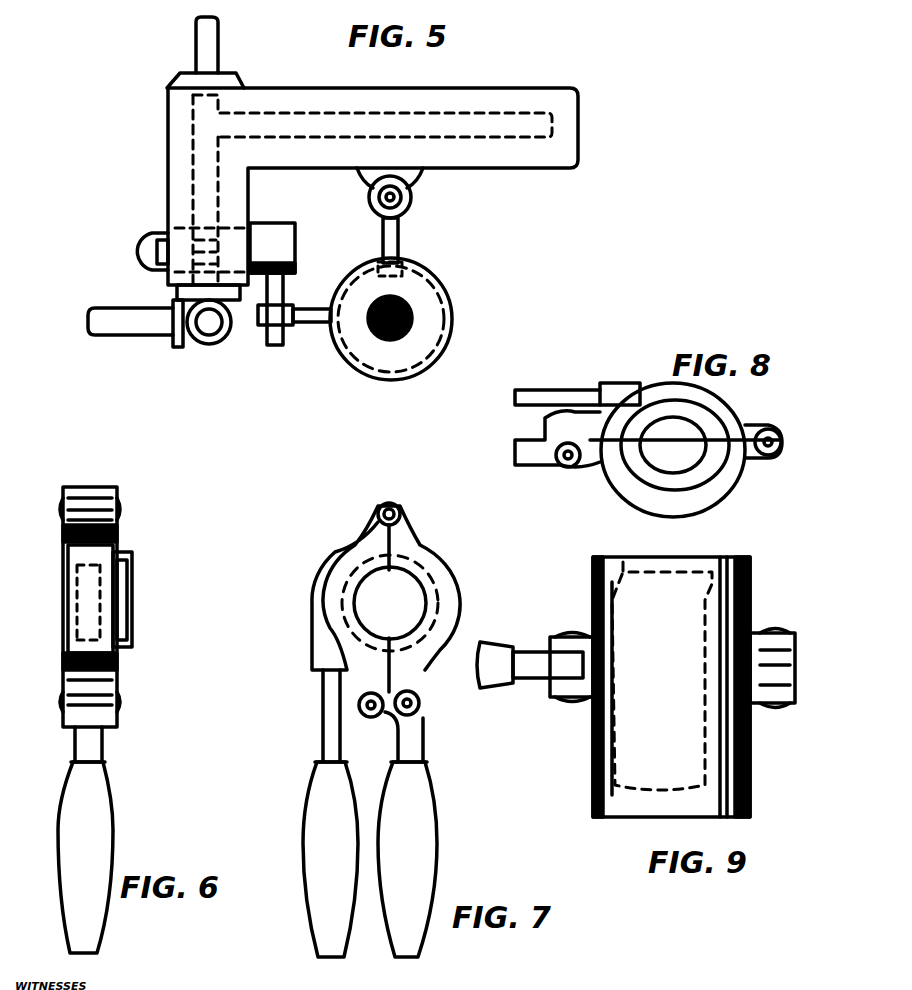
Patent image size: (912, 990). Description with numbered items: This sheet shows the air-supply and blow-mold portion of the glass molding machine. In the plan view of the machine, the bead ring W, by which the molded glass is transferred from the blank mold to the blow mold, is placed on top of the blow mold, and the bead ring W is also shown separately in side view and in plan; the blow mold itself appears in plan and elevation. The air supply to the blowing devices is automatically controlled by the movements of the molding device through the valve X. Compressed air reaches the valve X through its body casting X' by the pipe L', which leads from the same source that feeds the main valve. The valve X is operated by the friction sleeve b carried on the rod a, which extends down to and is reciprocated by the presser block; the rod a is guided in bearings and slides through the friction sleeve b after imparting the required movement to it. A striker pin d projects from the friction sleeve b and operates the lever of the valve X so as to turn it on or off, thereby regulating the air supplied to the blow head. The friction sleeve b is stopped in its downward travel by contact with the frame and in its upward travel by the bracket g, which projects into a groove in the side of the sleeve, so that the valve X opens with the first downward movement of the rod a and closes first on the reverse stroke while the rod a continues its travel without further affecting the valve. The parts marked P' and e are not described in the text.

In FIG. 5, the body casting X' is at (351, 186).
In FIG. 5, the pipe L' is at (209, 52).
In FIG. 5, the valve X is at (272, 248).
In FIG. 5, the pivot rod P' is at (164, 331).
In FIG. 5, the link bar e is at (275, 321).
In FIG. 5, the striker pin d is at (312, 330).
In FIG. 5, the friction sleeve b is at (391, 325).
In FIG. 5, the rod a is at (398, 320).
In FIG. 5, the bracket g is at (390, 215).
In FIG. 7, the bead ring W is at (379, 730).
In FIG. 6, the bead ring W is at (72, 720).